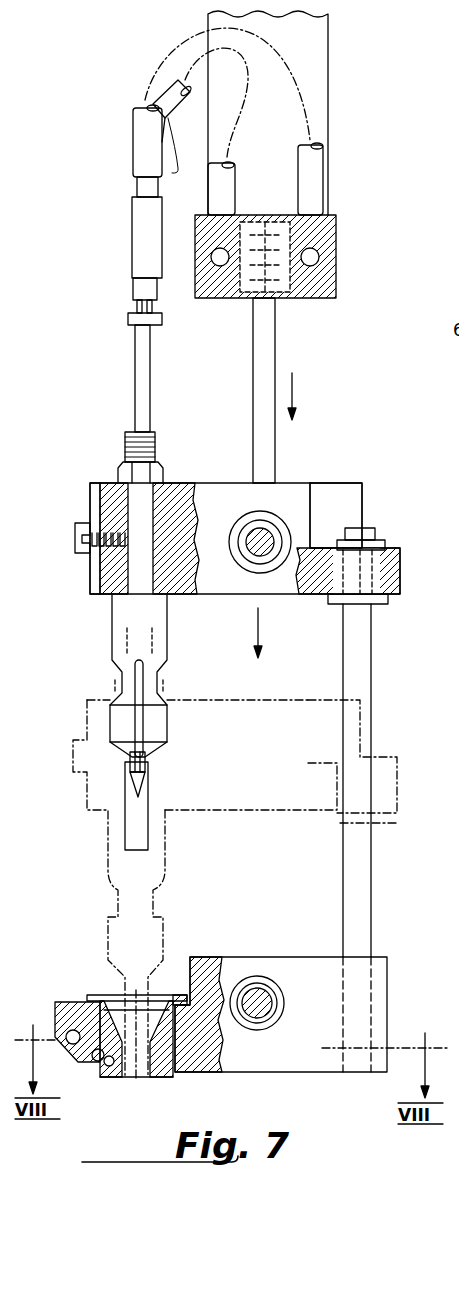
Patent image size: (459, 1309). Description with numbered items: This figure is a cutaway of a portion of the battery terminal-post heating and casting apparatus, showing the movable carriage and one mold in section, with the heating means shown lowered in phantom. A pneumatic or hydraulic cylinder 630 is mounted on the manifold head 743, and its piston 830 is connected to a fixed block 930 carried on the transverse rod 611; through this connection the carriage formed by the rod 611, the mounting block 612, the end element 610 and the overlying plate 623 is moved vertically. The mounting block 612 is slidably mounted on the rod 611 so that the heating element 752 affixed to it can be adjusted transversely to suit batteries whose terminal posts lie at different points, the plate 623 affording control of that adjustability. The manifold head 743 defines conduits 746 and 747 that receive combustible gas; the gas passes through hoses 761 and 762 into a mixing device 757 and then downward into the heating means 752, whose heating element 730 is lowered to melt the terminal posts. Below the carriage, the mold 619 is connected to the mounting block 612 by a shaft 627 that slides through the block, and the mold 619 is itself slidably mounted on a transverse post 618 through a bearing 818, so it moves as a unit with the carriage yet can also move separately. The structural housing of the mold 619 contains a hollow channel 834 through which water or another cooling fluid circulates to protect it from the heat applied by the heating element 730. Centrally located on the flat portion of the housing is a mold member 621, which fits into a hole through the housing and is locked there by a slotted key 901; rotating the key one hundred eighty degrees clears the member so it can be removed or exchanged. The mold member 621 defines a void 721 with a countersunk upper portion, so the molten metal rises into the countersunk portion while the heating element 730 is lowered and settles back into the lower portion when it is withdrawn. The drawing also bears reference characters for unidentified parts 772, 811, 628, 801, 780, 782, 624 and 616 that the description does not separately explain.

The pneumatic or hydraulic cylinder 630 is at (315, 55).
The hose 761 is at (140, 151).
The hose 762 is at (220, 193).
The mixing device 757 is at (133, 250).
The piston rod 772 is at (142, 355).
The manifold head 743 is at (337, 292).
The conduit 746 is at (220, 266).
The conduit 747 is at (319, 258).
The piston 830 is at (258, 384).
The mounting block 612 is at (216, 493).
The fixed block 930 is at (337, 495).
The pivot bearing 811 is at (270, 527).
The transverse rod 611 is at (260, 553).
The plate 623 is at (94, 497).
The adjusting screw 628 is at (80, 555).
The nut 801 is at (372, 538).
The shaft 627 is at (365, 640).
The heating element 752 is at (122, 611).
The spindle 780 is at (138, 722).
The cutter 782 is at (146, 766).
The heating element 730 is at (140, 815).
The mold 619 is at (68, 1010).
The transverse post 618 is at (258, 993).
The bearing 818 is at (265, 1022).
The slotted key 901 is at (110, 1078).
The mold member 621 is at (97, 1012).
The void 721 is at (143, 1080).
The hollow channel 834 is at (75, 1062).
The end element 610 is at (448, 157).
The arm 624 is at (458, 226).
The support 616 is at (449, 389).